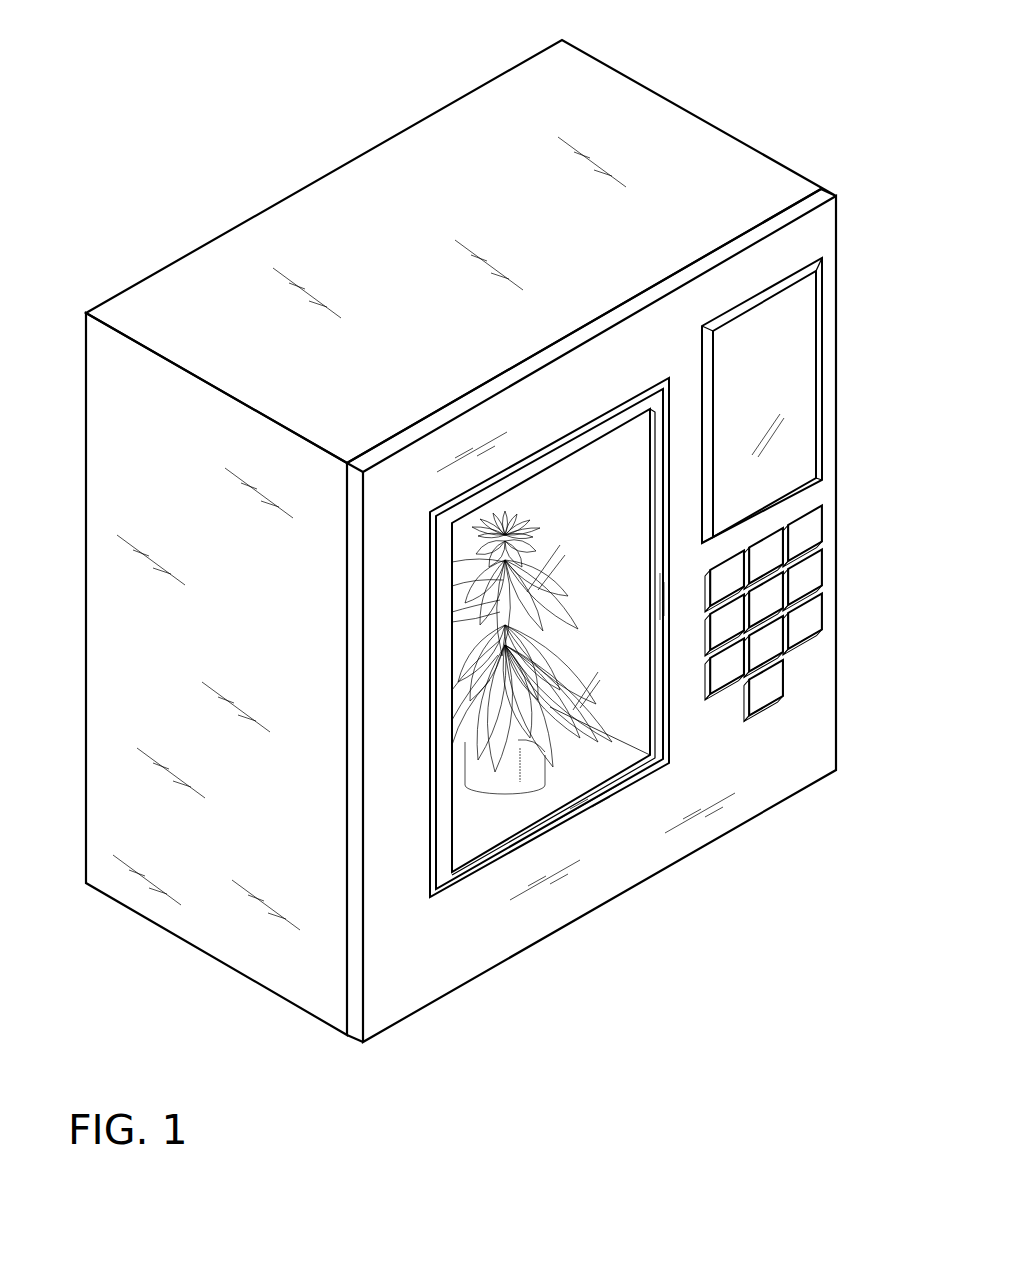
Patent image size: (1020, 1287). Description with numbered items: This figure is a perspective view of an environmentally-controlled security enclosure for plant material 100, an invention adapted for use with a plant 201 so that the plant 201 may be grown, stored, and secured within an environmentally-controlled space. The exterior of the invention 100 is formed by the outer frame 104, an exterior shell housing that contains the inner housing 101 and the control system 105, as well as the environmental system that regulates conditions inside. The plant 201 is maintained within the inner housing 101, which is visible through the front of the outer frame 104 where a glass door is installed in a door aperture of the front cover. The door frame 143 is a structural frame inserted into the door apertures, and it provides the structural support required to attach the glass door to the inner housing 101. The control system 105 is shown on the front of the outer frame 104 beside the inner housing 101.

The environmentally-controlled security enclosure for plant material 100 is at (150, 86).
The outer frame 104 is at (673, 127).
The inner housing 101 is at (592, 513).
The control system 105 is at (815, 531).
The door frame 143 is at (592, 802).
The plant 201 is at (506, 780).